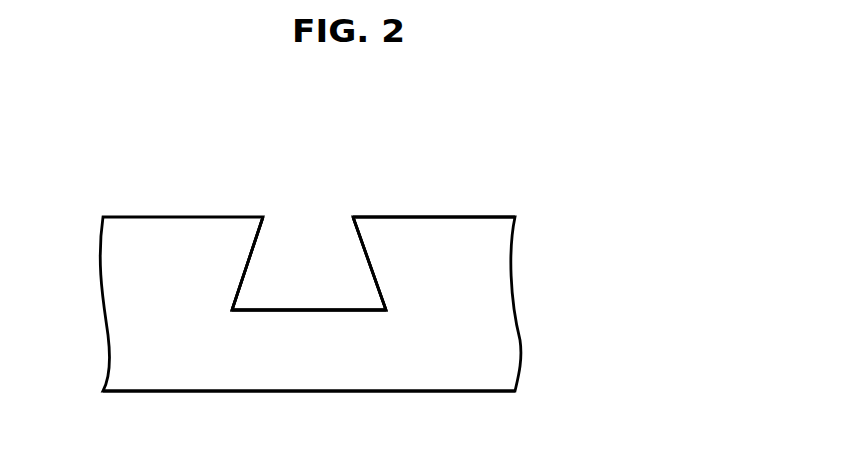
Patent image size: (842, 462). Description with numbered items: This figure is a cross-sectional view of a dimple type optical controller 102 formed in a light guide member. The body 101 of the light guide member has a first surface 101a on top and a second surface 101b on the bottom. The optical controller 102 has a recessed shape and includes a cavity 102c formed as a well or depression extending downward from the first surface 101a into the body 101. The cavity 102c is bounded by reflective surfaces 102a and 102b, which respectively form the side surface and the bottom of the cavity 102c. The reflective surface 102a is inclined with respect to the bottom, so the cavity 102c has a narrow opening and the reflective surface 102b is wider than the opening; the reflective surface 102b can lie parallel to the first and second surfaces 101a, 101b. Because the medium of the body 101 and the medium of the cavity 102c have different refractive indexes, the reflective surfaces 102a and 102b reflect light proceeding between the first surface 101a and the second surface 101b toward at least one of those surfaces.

The body 101 is at (545, 327).
The first surface 101a is at (418, 217).
The second surface 101b is at (363, 393).
The optical controller 102 is at (294, 206).
The reflective surface 102a is at (258, 272).
The reflective surface 102b is at (290, 310).
The cavity 102c is at (330, 273).